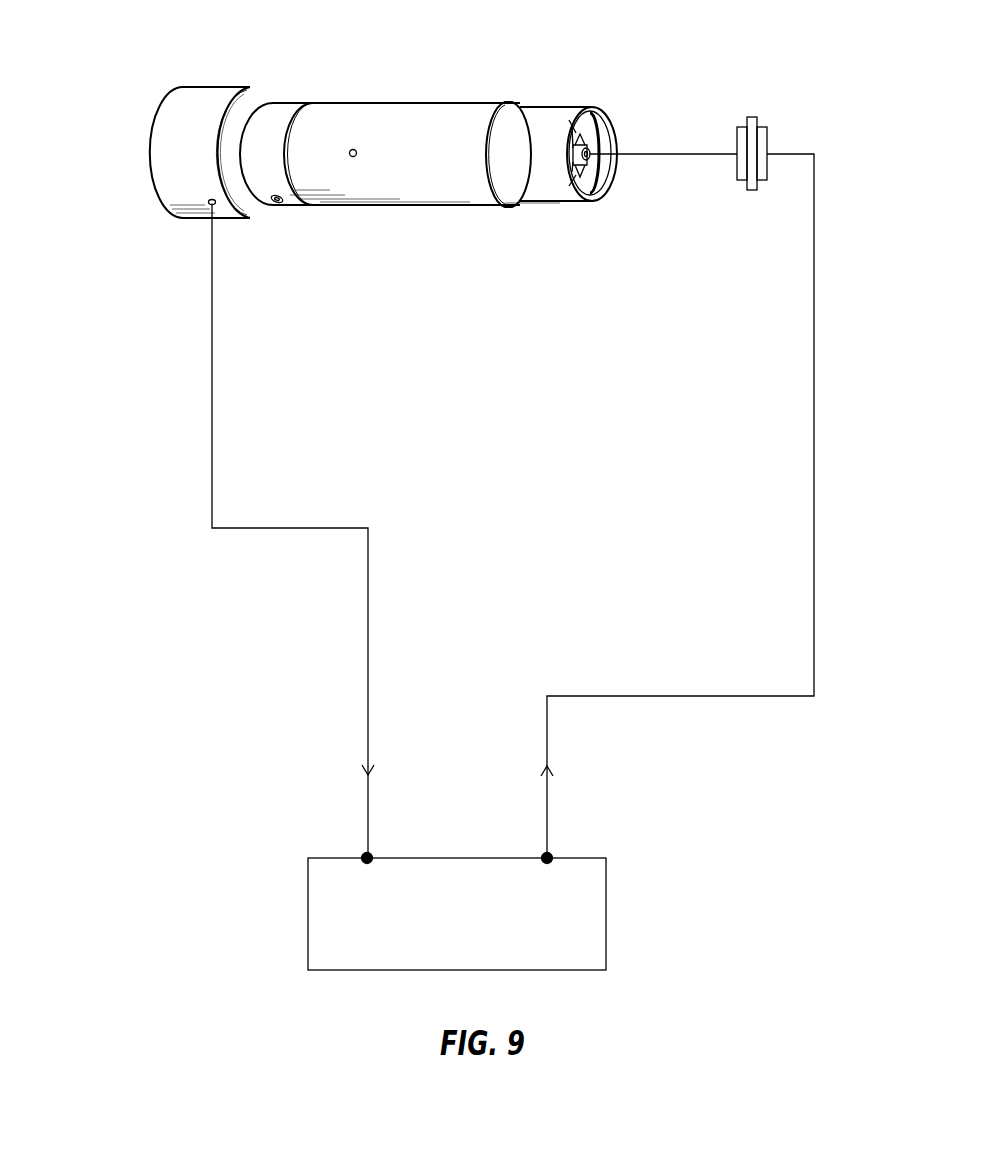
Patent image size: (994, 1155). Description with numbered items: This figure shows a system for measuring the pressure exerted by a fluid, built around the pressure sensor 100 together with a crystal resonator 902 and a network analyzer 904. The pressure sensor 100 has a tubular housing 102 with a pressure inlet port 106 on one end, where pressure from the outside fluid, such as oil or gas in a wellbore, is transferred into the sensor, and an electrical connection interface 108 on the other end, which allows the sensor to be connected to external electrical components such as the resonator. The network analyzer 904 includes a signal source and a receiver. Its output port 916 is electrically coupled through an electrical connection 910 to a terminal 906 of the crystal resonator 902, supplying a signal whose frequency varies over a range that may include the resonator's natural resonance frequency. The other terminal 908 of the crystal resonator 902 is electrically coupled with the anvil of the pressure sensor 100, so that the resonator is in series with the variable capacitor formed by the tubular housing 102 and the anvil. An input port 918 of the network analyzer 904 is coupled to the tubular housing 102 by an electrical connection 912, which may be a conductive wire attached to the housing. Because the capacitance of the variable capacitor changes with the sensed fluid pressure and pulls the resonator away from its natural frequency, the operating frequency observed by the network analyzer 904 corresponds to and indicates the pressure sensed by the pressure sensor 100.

The pressure sensor 100 is at (381, 120).
The tubular housing 102 is at (552, 107).
The pressure inlet port 106 is at (145, 152).
The electrical connection interface 108 is at (613, 176).
The crystal resonator 902 is at (752, 123).
The network analyzer 904 is at (308, 913).
The terminal 906 is at (767, 140).
The terminal 908 is at (737, 140).
The electrical connection 910 is at (814, 422).
The electrical connection 912 is at (367, 690).
The output port 916 is at (551, 856).
The input port 918 is at (363, 856).